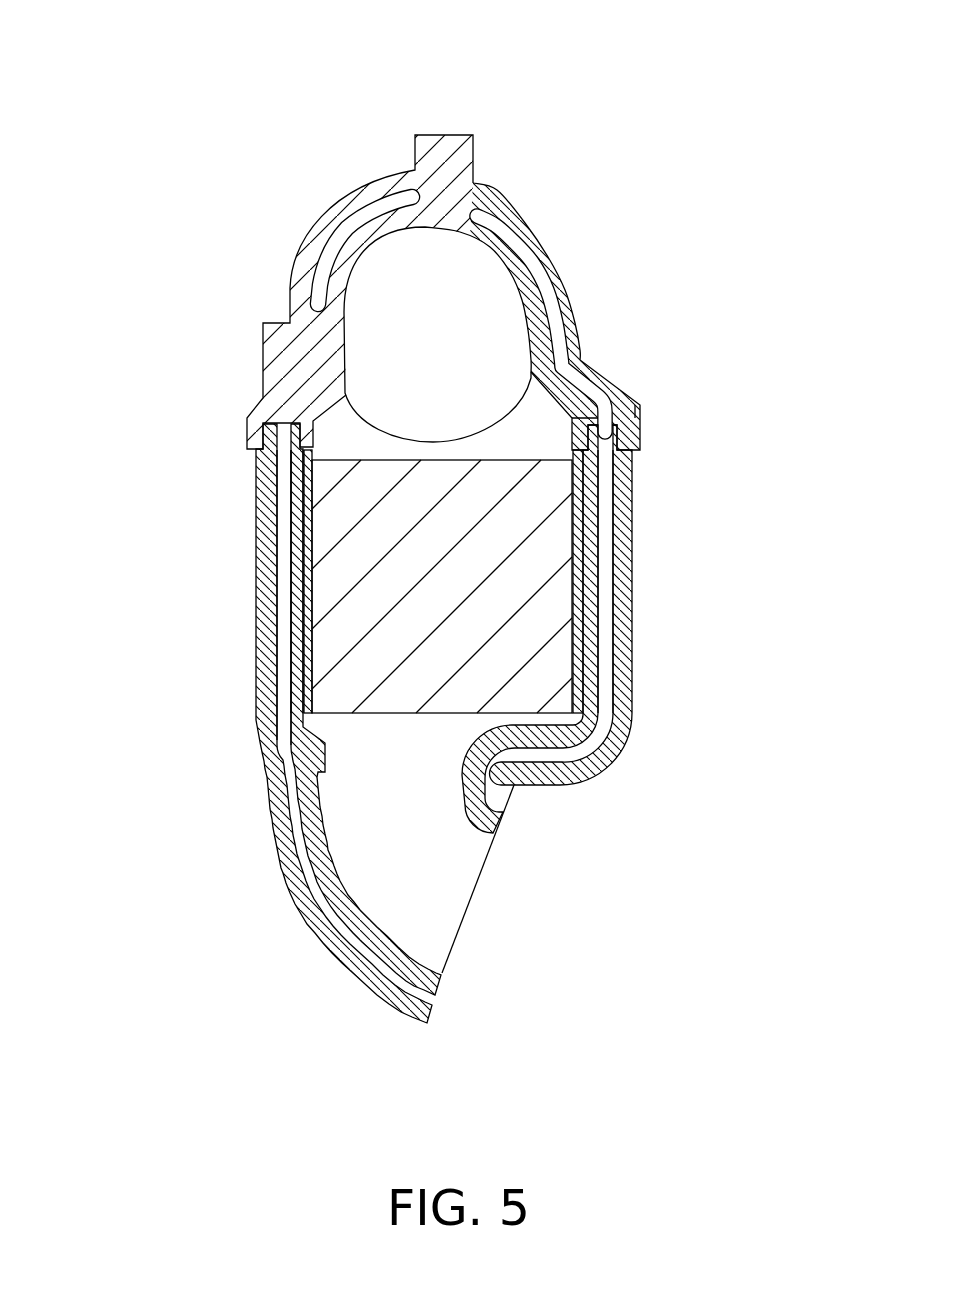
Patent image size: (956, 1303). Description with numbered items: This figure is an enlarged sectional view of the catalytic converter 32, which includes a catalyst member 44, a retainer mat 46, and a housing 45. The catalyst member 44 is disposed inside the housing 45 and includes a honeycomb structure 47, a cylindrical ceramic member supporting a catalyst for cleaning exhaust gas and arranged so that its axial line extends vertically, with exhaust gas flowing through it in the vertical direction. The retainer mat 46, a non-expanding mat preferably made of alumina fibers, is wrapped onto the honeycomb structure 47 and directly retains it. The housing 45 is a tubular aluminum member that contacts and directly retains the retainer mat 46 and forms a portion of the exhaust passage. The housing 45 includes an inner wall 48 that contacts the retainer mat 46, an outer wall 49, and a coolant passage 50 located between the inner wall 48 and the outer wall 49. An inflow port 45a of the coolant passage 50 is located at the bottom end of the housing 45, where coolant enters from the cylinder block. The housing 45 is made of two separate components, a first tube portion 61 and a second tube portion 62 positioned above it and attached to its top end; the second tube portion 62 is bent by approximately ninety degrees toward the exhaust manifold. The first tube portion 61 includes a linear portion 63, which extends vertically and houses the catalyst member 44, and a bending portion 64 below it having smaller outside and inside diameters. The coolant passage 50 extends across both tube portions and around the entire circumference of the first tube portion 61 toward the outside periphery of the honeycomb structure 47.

The catalytic converter 32 is at (296, 175).
The catalyst member 44 is at (350, 558).
The housing 45 is at (629, 578).
The inflow port 45a is at (505, 794).
The retainer mat 46 is at (290, 500).
The honeycomb structure 47 is at (360, 652).
The inner wall 48 is at (584, 668).
The outer wall 49 is at (622, 618).
The coolant passage 50 is at (604, 568).
The first tube portion 61 is at (599, 693).
The second tube portion 62 is at (592, 360).
The linear portion 63 is at (264, 730).
The bending portion 64 is at (313, 928).